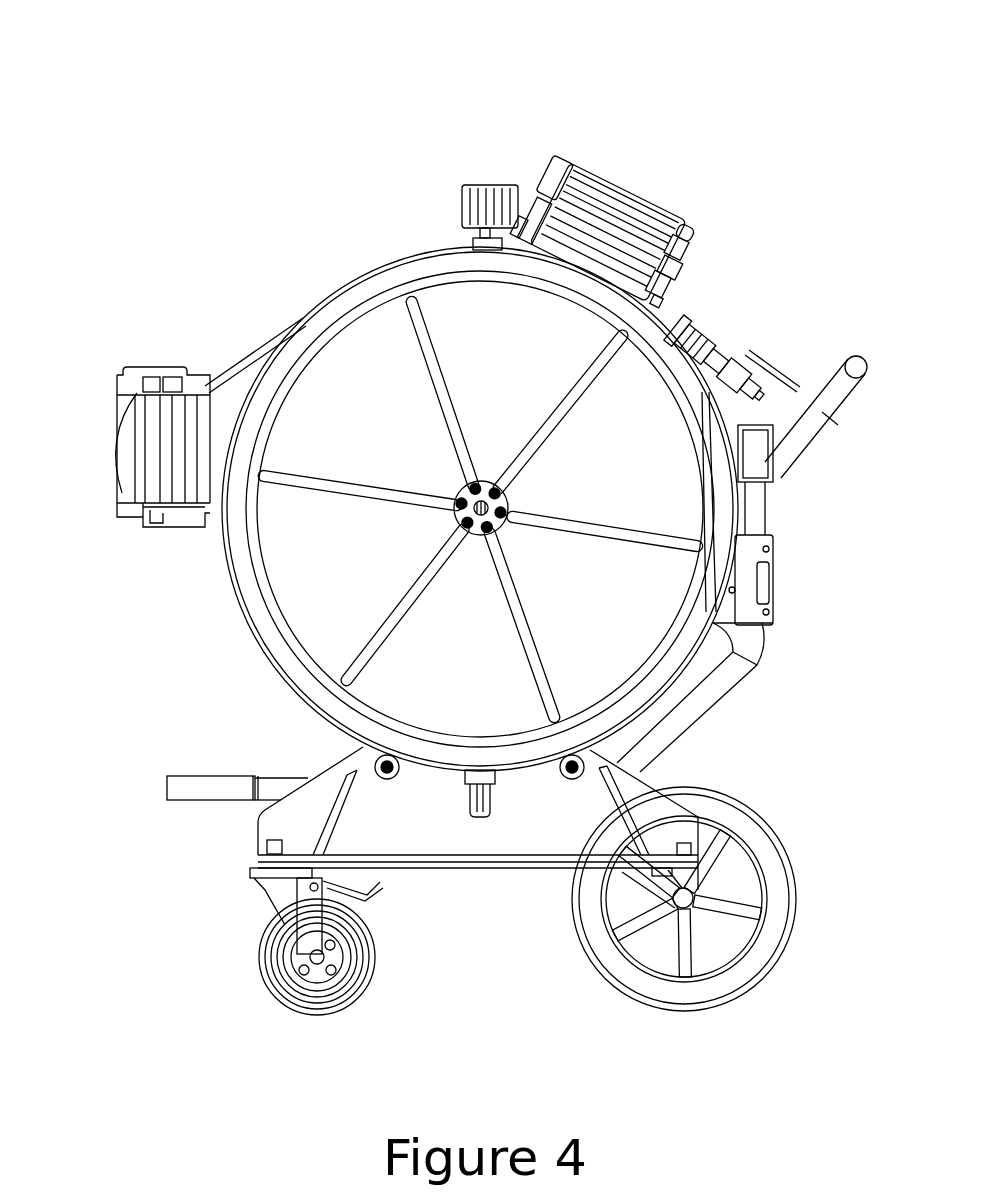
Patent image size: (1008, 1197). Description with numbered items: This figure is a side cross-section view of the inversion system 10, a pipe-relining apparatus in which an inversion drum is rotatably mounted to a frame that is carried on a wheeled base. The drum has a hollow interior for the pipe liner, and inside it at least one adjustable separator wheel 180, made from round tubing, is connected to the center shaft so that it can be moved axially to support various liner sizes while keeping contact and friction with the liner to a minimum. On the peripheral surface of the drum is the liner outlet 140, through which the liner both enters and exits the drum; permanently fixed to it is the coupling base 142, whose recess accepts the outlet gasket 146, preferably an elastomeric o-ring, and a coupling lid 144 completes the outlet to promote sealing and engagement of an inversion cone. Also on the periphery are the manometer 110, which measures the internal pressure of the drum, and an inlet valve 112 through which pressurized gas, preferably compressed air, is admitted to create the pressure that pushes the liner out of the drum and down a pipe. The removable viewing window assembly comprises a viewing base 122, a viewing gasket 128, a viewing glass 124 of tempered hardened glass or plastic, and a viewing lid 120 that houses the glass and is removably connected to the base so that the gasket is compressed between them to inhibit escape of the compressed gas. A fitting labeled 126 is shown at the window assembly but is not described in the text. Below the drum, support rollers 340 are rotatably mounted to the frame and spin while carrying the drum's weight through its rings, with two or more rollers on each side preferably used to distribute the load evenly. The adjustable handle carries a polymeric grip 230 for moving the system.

The inversion system 10 is at (338, 211).
The manometer 110 is at (488, 182).
The inlet valve 112 is at (722, 325).
The viewing lid 120 is at (679, 171).
The viewing base 122 is at (609, 228).
The viewing glass 124 is at (541, 199).
The lower fastener 126 is at (662, 281).
The viewing gasket 128 is at (679, 241).
The liner outlet 140 is at (180, 434).
The coupling base 142 is at (183, 531).
The coupling lid 144 is at (139, 366).
The outlet gasket 146 is at (156, 489).
The separator wheel 180 is at (330, 492).
The grip 230 is at (201, 808).
The support roller 340 is at (392, 783).